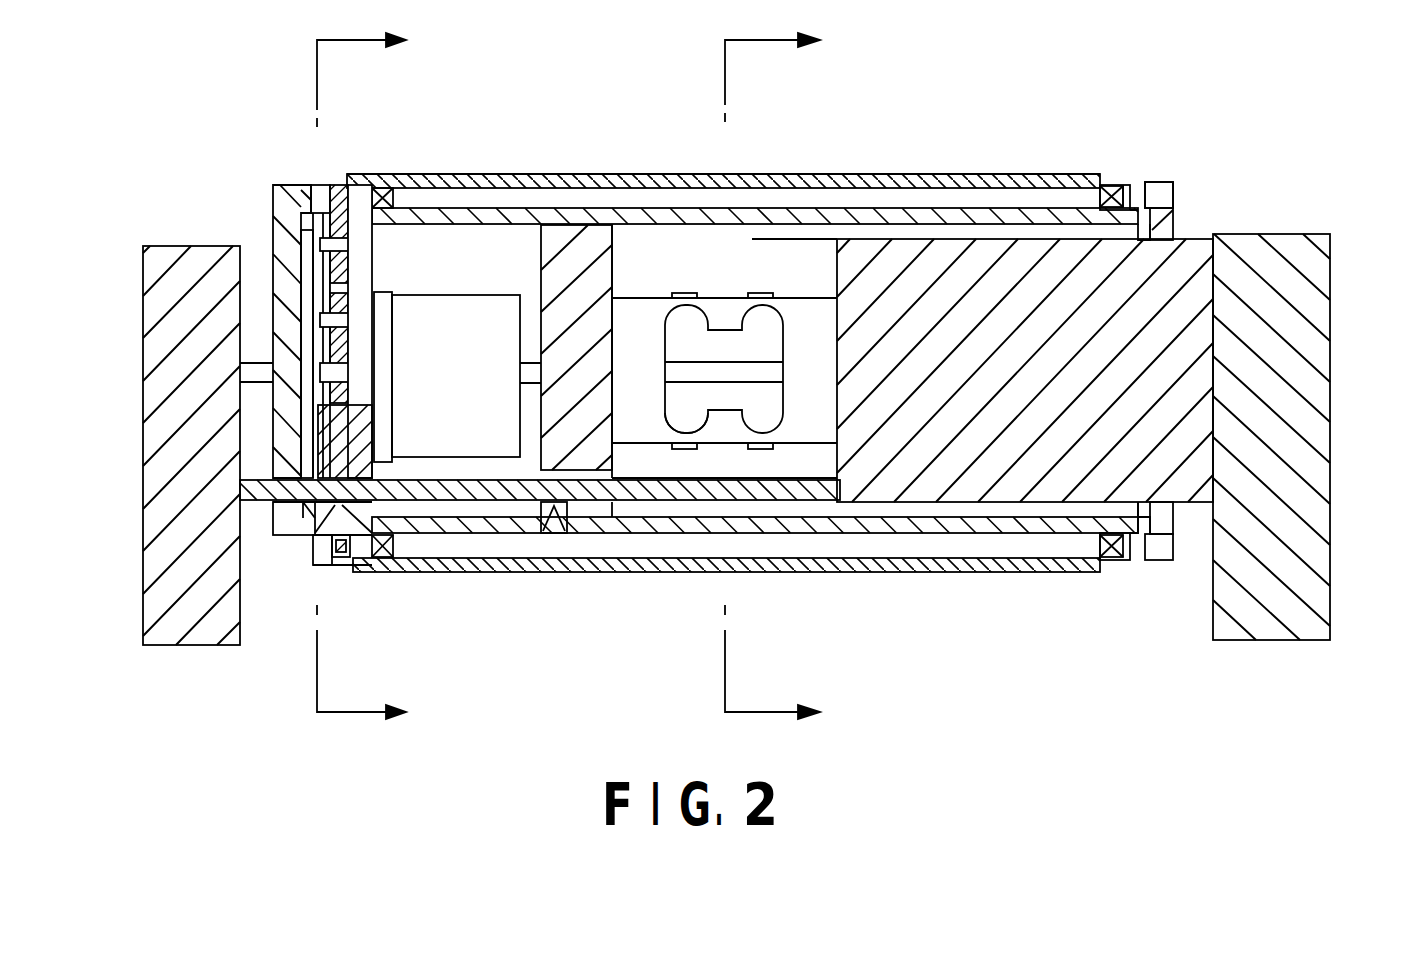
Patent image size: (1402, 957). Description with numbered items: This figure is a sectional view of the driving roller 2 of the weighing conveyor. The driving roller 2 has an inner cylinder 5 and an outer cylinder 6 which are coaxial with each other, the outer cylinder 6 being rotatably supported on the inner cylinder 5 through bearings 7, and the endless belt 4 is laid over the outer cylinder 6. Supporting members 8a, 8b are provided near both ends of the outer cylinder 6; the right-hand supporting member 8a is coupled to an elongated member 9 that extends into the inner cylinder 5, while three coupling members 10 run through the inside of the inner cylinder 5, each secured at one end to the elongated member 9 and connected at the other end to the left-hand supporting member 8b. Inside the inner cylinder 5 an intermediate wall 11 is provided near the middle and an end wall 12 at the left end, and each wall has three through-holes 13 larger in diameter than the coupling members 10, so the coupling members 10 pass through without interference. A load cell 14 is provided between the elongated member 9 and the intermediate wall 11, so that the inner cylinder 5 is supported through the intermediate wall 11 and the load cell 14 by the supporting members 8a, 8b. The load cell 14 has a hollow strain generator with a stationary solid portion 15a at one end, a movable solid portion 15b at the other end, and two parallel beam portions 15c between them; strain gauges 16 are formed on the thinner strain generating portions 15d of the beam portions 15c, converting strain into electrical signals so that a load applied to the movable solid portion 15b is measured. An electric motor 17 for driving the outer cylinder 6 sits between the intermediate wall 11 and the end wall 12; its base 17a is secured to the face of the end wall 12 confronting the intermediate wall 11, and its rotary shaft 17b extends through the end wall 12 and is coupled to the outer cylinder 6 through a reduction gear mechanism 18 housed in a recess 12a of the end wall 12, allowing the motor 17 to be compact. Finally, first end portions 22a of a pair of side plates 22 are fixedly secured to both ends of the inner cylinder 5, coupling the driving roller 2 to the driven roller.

The driving roller 2 is at (918, 150).
The endless belt 4 is at (952, 173).
The inner cylinder 5 is at (510, 213).
The outer cylinder 6 is at (1107, 185).
The bearings 7 is at (383, 190).
The supporting member 8a is at (1313, 416).
The supporting member 8b is at (165, 472).
The elongated member 9 is at (1200, 240).
The coupling members 10 is at (248, 493).
The intermediate wall 11 is at (562, 317).
The end wall 12 is at (350, 293).
The recess 12a is at (323, 222).
The through-holes 13 is at (340, 507).
The load cell 14 is at (752, 247).
The stationary solid portion 15a is at (815, 327).
The movable solid portion 15b is at (637, 330).
The beam portions 15c is at (723, 310).
The strain generating portions 15d is at (687, 437).
The strain gauges 16 is at (758, 450).
The electric motor 17 is at (425, 438).
The base 17a is at (387, 390).
The rotary shaft 17b is at (372, 370).
The reduction gear mechanism 18 is at (322, 298).
The side plates 22 is at (290, 243).
The first end portions 22a is at (1159, 371).